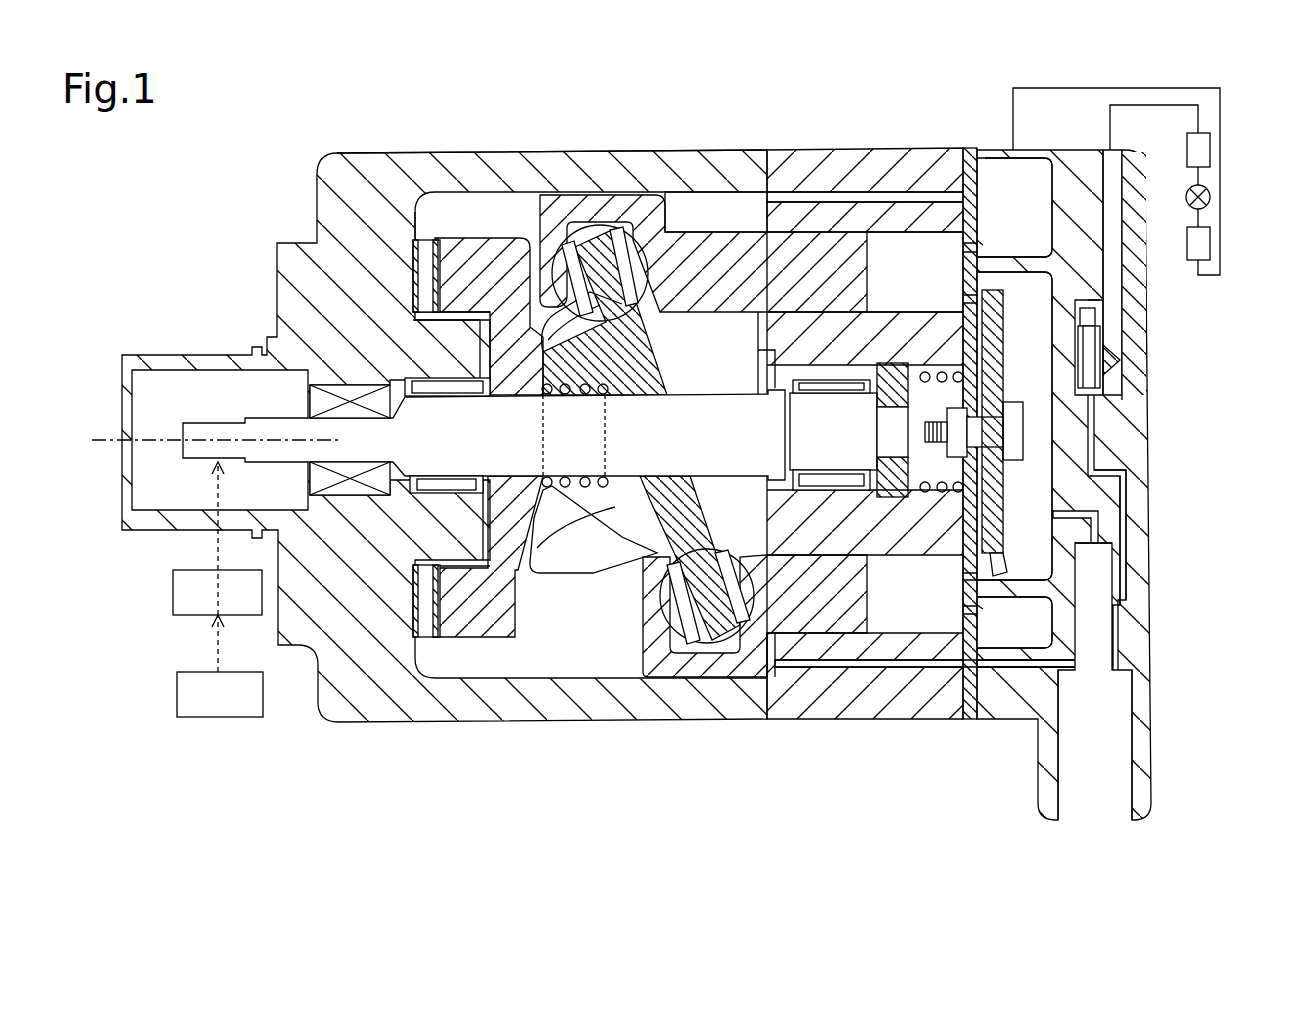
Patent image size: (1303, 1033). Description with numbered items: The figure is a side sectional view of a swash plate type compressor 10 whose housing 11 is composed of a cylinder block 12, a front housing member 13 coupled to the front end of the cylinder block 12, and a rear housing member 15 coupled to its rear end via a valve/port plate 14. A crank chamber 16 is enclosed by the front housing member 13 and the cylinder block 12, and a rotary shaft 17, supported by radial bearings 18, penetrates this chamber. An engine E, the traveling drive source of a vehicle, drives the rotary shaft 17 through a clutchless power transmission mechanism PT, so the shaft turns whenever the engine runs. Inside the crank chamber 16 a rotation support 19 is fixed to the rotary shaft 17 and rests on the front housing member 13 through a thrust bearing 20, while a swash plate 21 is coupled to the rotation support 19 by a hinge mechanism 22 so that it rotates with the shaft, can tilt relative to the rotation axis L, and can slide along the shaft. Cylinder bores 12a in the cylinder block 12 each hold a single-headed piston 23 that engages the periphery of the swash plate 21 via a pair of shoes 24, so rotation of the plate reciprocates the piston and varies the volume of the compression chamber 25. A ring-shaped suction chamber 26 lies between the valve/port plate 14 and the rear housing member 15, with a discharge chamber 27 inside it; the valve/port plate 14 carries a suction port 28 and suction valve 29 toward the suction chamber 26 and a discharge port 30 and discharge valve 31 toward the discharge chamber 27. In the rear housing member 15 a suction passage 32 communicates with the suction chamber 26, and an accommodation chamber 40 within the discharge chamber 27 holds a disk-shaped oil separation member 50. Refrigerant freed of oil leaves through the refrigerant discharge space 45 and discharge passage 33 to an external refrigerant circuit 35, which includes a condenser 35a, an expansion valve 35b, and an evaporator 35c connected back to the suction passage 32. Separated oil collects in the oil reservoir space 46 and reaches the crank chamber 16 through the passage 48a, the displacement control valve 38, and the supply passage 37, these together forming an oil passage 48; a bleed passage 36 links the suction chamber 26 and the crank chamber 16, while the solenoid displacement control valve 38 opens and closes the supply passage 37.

The swash plate type compressor 10 is at (272, 128).
The housing 11 is at (366, 151).
The cylinder block 12 is at (824, 150).
The cylinder bore 12a is at (862, 739).
The front housing member 13 is at (738, 150).
The valve/port plate 14 is at (965, 150).
The rear housing member 15 is at (1060, 150).
The crank chamber 16 is at (490, 434).
The rotary shaft 17 is at (275, 418).
The radial bearing 18 is at (447, 486).
The rotation support 19 is at (490, 633).
The thrust bearing 20 is at (420, 260).
The swash plate 21 is at (588, 583).
The hinge mechanism 22 is at (597, 610).
The single-headed piston 23 is at (622, 200).
The shoe 24 is at (580, 240).
The compression chamber 25 is at (915, 272).
The suction chamber 26 is at (1014, 403).
The discharge chamber 27 is at (1014, 426).
The suction port 28 is at (985, 246).
The suction valve 29 is at (965, 247).
The discharge port 30 is at (965, 298).
The discharge valve 31 is at (1000, 300).
The suction passage 32 is at (1013, 150).
The discharge passage 33 is at (1125, 210).
The external refrigerant circuit 35 is at (1191, 182).
The condenser 35a is at (1212, 140).
The expansion valve 35b is at (1212, 197).
The evaporator 35c is at (1212, 243).
The bleed passage 36 is at (880, 197).
The supply passage 37 is at (903, 669).
The displacement control valve 38 is at (1140, 690).
The accommodation chamber 40 is at (1090, 305).
The refrigerant discharge space 45 is at (1120, 357).
The oil reservoir space 46 is at (1140, 405).
The oil passage 48 is at (1130, 515).
The passage 48a is at (1140, 452).
The oil separation member 50 is at (1093, 310).
The rotation axis L is at (118, 440).
The power transmission mechanism PT is at (173, 577).
The engine E is at (177, 673).